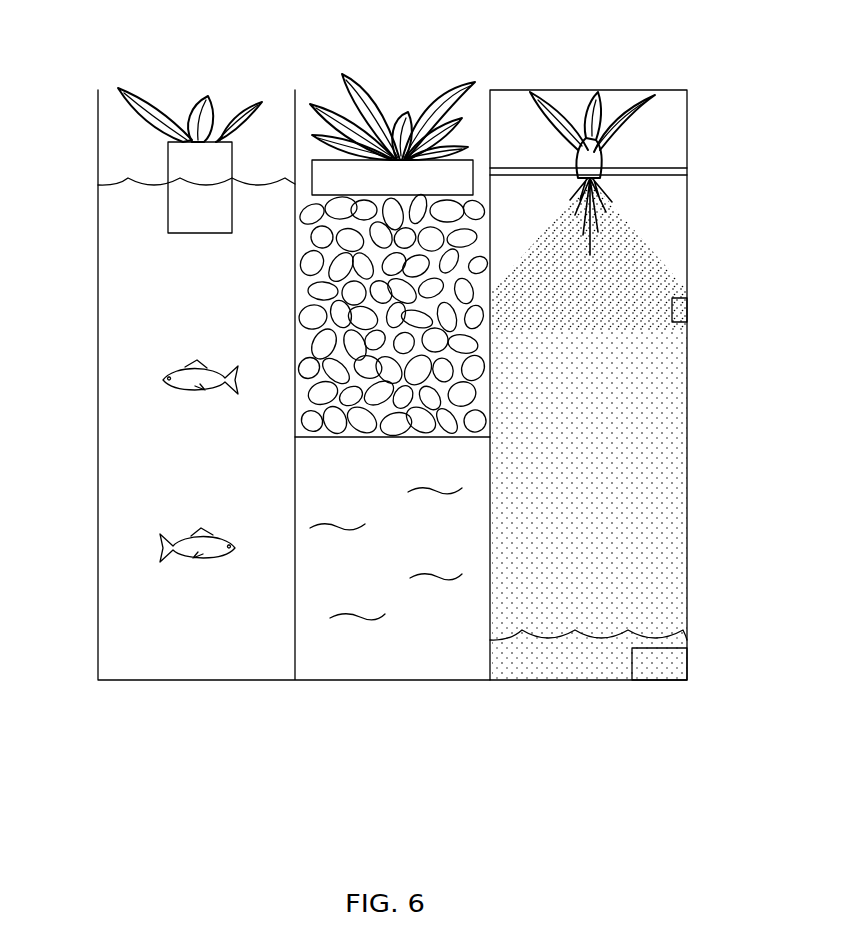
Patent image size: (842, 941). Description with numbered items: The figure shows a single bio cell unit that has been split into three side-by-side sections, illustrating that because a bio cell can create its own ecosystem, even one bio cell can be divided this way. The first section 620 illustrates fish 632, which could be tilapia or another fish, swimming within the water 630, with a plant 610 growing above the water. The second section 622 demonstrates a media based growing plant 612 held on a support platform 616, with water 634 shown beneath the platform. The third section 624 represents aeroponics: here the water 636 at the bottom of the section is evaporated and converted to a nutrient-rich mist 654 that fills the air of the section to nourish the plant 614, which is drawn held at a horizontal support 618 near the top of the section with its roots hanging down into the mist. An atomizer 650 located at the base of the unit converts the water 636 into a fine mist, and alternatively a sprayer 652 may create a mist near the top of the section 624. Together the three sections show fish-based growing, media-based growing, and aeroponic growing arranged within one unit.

The plant 610 is at (198, 100).
The media based growing plant 612 is at (387, 100).
The plant 614 is at (628, 100).
The support platform 616 is at (472, 170).
The plant support shelf 618 is at (655, 170).
The first section 620 is at (135, 272).
The second section 622 is at (298, 305).
The third section 624 is at (683, 90).
The water 630 is at (135, 460).
The fish 632 is at (195, 385).
The water 634 is at (375, 655).
The water 636 is at (548, 672).
The atomizer 650 is at (668, 668).
The sprayer 652 is at (680, 308).
The nutrient-rich mist 654 is at (660, 448).